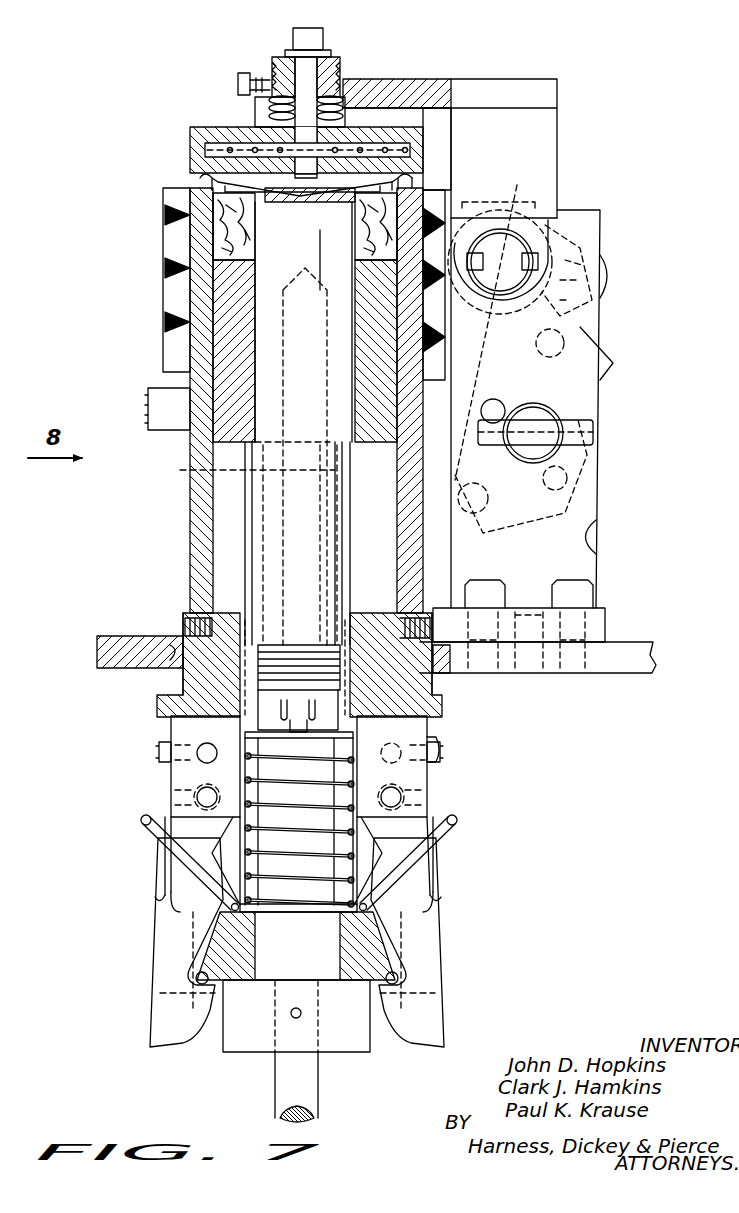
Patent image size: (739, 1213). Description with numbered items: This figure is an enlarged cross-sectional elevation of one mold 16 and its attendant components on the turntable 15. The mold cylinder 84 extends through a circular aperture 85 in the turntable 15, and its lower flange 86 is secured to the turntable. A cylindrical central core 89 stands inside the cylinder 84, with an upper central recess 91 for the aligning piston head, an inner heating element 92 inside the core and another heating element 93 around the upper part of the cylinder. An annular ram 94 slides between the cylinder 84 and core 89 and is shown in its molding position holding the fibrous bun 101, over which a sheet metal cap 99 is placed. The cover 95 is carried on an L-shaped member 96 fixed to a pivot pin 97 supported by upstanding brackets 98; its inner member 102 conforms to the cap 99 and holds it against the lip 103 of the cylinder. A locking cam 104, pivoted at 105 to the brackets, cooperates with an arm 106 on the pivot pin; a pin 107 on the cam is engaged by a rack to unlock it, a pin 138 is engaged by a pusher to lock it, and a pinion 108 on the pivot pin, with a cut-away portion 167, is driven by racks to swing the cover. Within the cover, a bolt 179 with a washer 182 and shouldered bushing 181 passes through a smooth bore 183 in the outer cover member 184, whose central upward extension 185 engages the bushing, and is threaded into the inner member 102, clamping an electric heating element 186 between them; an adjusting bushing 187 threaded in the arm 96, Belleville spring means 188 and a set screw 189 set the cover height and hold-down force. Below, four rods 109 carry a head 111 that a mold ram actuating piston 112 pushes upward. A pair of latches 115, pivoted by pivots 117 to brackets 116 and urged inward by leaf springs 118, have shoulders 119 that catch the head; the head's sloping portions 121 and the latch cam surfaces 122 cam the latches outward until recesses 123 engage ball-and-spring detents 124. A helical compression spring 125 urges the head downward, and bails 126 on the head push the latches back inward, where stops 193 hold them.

The turntable 15 is at (105, 635).
The mold 16 is at (186, 523).
The mold cylinder 84 is at (206, 494).
The circular aperture 85 is at (183, 640).
The flange 86 is at (158, 706).
The central core 89 is at (262, 414).
The upper central recess 91 is at (337, 191).
The inner heating element 92 is at (234, 469).
The heating element 93 is at (166, 283).
The annular ram 94 is at (196, 358).
The cover 95 is at (275, 131).
The L-shaped member 96 is at (540, 146).
The pivot pin 97 is at (514, 250).
The upstanding brackets 98 is at (598, 540).
The sheet metal cap 99 is at (258, 220).
The molded fibrous bun 101 is at (441, 192).
The inner cover member 102 is at (212, 183).
The lip 103 is at (420, 176).
The locking cam 104 is at (604, 372).
The pivot 105 is at (556, 420).
The arm 106 is at (606, 270).
The pin 107 is at (585, 340).
The pinion 108 is at (558, 235).
The rods 109 is at (240, 541).
The head 111 is at (224, 946).
The mold ram actuating piston 112 is at (360, 1044).
The latches 115 is at (168, 926).
The brackets 116 is at (180, 720).
The pivots 117 is at (260, 789).
The leaf springs 118 is at (432, 828).
The shoulders 119 is at (196, 976).
The sloping outer portions of head 121 is at (200, 910).
The cam surface 122 is at (402, 924).
The recesses 123 is at (171, 788).
The ball-and-spring detents 124 is at (343, 672).
The helical compression spring 125 is at (342, 756).
The bails 126 is at (452, 833).
The pin 138 is at (490, 505).
The cut-away portion of pinion 167 is at (509, 196).
The bolt 179 is at (314, 36).
The shouldered bushing 181 is at (338, 70).
The washer 182 is at (327, 54).
The smooth bore 183 is at (290, 82).
The outer cover member 184 is at (192, 137).
The central upward extension 185 is at (317, 117).
The electric heating element 186 is at (207, 150).
The adjusting bushing 187 is at (339, 98).
The spring means 188 is at (270, 108).
The set screw 189 is at (240, 76).
The stops 193 is at (441, 753).